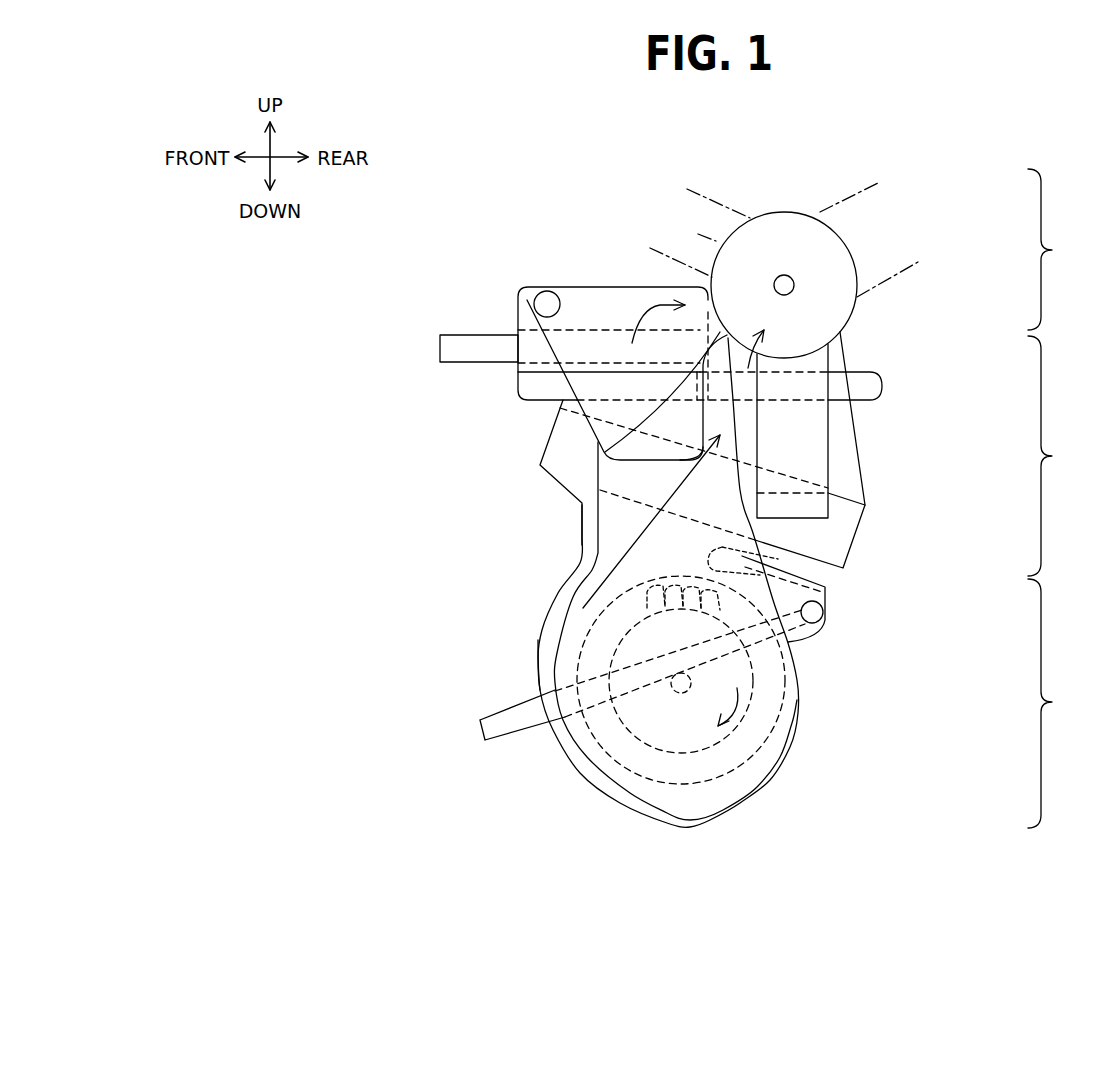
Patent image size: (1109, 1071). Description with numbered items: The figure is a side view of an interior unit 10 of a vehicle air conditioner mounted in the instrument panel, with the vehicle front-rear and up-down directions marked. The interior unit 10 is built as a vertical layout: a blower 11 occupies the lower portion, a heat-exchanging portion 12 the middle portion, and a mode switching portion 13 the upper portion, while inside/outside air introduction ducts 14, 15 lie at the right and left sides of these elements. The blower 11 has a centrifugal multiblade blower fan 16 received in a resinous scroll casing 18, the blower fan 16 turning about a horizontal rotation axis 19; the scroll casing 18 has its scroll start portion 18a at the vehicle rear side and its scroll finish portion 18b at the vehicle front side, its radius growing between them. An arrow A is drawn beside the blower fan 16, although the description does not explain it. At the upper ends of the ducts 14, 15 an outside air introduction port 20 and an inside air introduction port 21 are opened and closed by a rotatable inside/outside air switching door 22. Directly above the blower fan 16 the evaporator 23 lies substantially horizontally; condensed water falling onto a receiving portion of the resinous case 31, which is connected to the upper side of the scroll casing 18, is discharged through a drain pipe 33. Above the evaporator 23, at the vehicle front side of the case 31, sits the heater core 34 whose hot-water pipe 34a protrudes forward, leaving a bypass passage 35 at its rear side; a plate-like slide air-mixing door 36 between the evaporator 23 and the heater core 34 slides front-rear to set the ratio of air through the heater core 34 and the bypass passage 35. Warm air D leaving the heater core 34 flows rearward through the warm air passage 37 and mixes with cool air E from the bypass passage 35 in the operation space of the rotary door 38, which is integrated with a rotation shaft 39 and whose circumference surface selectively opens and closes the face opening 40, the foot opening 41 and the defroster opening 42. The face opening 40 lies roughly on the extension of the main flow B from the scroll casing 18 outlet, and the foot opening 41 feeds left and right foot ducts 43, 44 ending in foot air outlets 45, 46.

The interior unit 10 is at (522, 629).
The blower 11 is at (1062, 703).
The heat-exchanging portion 12 is at (1062, 456).
The mode switching portion 13 is at (1062, 249).
The inside/outside air introduction duct 14 is at (424, 665).
The inside/outside air introduction duct 15 is at (540, 657).
The blower fan 16 is at (705, 790).
The scroll casing 18 is at (583, 787).
The scroll start portion 18a is at (823, 598).
The scroll finish portion 18b is at (572, 553).
The rotation axis 19 is at (681, 695).
The outside air introduction port 20 is at (617, 287).
The inside air introduction port 21 is at (518, 377).
The inside/outside air switching door 22 is at (623, 437).
The evaporator 23 is at (742, 556).
The case 31 is at (843, 473).
The drain pipe 33 is at (497, 731).
The heater core 34 is at (620, 430).
The hot-water pipe 34a is at (453, 333).
The bypass passage 35 is at (731, 372).
The slide air-mixing door 36 is at (541, 403).
The warm air passage 37 is at (626, 312).
The rotary door 38 is at (737, 365).
The rotation shaft 39 is at (790, 277).
The face opening 40 is at (860, 252).
The foot opening 41 is at (843, 360).
The defroster opening 42 is at (745, 232).
The foot duct 43 is at (884, 431).
The foot duct 44 is at (828, 430).
The foot air outlet 45 is at (883, 530).
The foot air outlet 46 is at (803, 522).
The rotation direction A is at (737, 703).
The main flow B is at (583, 608).
The warm air D is at (657, 300).
The cool air E is at (760, 352).